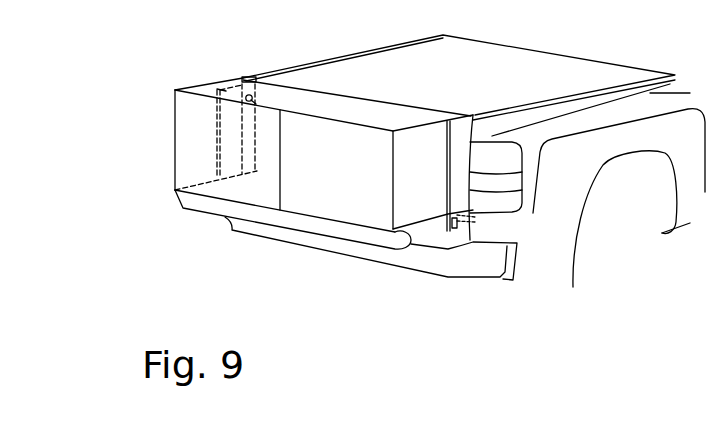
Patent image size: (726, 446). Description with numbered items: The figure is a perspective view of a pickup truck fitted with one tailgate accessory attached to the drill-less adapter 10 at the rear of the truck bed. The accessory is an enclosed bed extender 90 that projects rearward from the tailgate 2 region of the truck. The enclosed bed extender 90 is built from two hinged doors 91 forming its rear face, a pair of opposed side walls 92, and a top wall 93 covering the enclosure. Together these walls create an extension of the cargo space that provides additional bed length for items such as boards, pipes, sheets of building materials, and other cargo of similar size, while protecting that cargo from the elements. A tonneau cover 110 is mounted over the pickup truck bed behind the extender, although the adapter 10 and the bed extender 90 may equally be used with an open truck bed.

The tailgate 2 is at (353, 233).
The drill-less adapter 10 is at (460, 172).
The enclosed bed extender 90 is at (283, 181).
The hinged doors 91 is at (303, 191).
The side walls 92 is at (422, 188).
The top wall 93 is at (268, 93).
The tonneau cover 110 is at (448, 89).